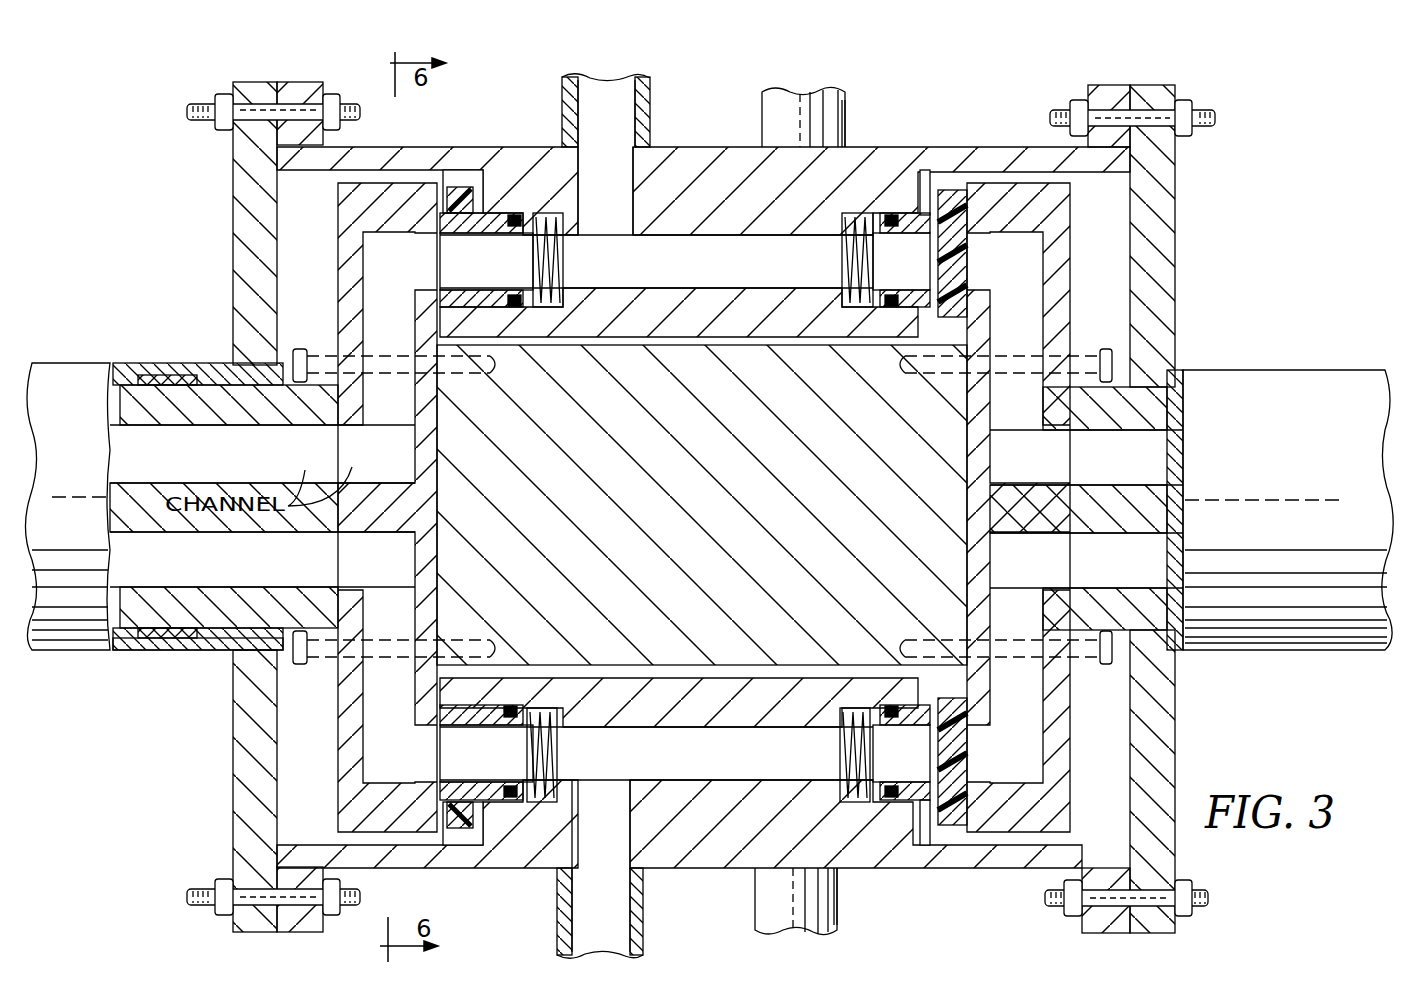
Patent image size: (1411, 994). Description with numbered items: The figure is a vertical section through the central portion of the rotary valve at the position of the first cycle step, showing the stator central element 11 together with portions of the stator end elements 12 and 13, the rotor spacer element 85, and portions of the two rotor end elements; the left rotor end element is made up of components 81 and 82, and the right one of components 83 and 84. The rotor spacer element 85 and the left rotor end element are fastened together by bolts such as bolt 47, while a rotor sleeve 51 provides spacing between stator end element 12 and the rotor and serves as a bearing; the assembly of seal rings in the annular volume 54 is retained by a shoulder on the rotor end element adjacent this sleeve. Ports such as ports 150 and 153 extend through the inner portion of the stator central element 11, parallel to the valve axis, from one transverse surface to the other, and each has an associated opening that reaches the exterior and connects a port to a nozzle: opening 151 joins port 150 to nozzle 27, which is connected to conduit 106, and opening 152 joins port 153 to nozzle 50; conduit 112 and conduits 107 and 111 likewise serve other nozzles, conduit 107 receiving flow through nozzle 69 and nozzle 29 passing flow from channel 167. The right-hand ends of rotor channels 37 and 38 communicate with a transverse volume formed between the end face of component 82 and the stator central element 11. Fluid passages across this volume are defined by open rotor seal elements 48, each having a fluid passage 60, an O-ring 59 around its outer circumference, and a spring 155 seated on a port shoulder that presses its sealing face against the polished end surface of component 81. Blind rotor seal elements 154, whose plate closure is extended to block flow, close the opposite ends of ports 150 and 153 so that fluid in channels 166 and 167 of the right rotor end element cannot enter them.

The stator central element 11 is at (397, 147).
The stator end element 12 is at (88, 363).
The stator end element 13 is at (1280, 368).
The nozzle 27 is at (652, 112).
The nozzle 29 is at (752, 915).
The channel 37 is at (170, 465).
The channel 38 is at (170, 573).
The bolt 47 is at (300, 665).
The open rotor seal element 48 is at (458, 187).
The nozzle 50 is at (545, 908).
The rotor sleeve 51 is at (148, 645).
The annular volume 54 is at (112, 394).
The O-ring 59 is at (514, 310).
The fluid passage 60 is at (483, 277).
The nozzle 69 is at (850, 120).
The rotor end element component 81 is at (338, 213).
The rotor end element component 82 is at (300, 350).
The rotor end element component 83 is at (1070, 206).
The rotor end element component 84 is at (1108, 347).
The rotor spacer element 85 is at (632, 340).
The conduit 106 is at (606, 97).
The conduit 107 is at (803, 102).
The conduit 111 is at (866, 930).
The conduit 112 is at (577, 945).
The port 150 is at (705, 318).
The opening 151 is at (675, 188).
The opening 152 is at (580, 815).
The port 153 is at (677, 763).
The blind rotor seal element 154 is at (950, 190).
The spring 155 is at (563, 258).
The channel 166 is at (1000, 327).
The channel 167 is at (1090, 570).